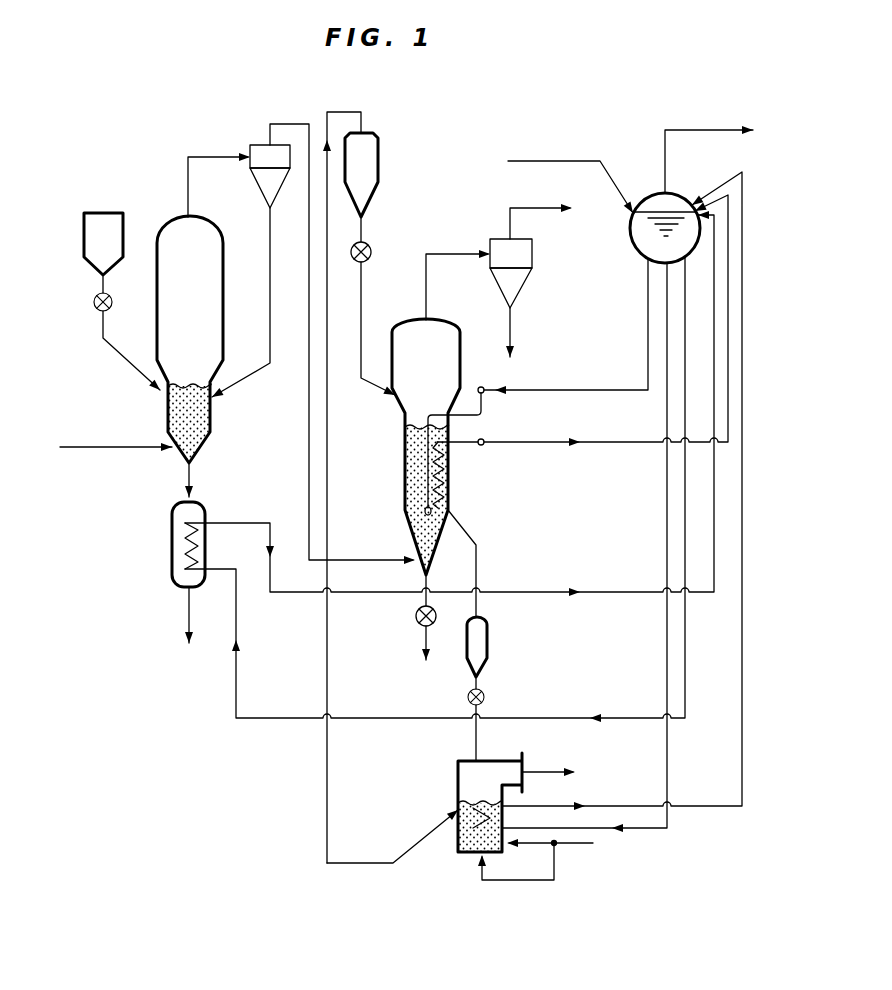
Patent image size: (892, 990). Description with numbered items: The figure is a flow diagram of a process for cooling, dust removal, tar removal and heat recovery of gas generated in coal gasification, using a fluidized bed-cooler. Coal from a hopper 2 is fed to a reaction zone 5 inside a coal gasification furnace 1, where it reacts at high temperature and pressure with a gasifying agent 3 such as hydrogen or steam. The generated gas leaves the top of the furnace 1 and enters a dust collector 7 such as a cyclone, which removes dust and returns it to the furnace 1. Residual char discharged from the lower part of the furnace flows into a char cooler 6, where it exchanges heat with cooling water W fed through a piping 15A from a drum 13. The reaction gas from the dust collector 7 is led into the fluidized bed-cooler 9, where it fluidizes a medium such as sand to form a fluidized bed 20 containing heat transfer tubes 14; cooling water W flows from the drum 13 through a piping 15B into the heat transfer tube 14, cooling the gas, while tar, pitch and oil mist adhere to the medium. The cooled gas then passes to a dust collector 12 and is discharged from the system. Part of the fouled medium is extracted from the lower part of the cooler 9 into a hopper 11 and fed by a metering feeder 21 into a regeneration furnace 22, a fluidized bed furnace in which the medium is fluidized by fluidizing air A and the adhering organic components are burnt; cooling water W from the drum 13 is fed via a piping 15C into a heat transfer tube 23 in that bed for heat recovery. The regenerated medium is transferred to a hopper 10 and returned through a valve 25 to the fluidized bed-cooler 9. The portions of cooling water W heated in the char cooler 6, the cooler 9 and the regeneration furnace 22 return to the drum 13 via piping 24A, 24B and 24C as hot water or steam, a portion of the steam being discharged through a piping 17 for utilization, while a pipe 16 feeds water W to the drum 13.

The coal gasification furnace 1 is at (233, 258).
The hopper 2 is at (123, 222).
The gasifying agent 3 is at (112, 447).
The reaction zone 5 is at (209, 417).
The char cooler 6 is at (172, 553).
The dust collector 7 is at (258, 143).
The fluidized bed-cooler 9 is at (405, 490).
The hopper for the fluidizing medium 10 is at (378, 151).
The hopper for the extracted medium 11 is at (487, 638).
The dust collector 12 is at (532, 252).
The drum 13 is at (651, 196).
The heat transfer tubes 14 is at (445, 476).
The piping 15A is at (361, 718).
The piping 15B is at (558, 390).
The piping 15C is at (625, 830).
The pipe 16 is at (552, 161).
The piping 17 is at (708, 130).
The fluidized bed 20 is at (405, 447).
The metering feeder 21 is at (484, 694).
The regeneration furnace 22 is at (458, 780).
The heat transfer tube 23 is at (500, 830).
The piping 24A is at (594, 592).
The piping 24B is at (556, 442).
The piping 24C is at (603, 806).
The valve 25 is at (370, 246).
The cooling water W is at (634, 237).
The fluidizing air A is at (570, 843).